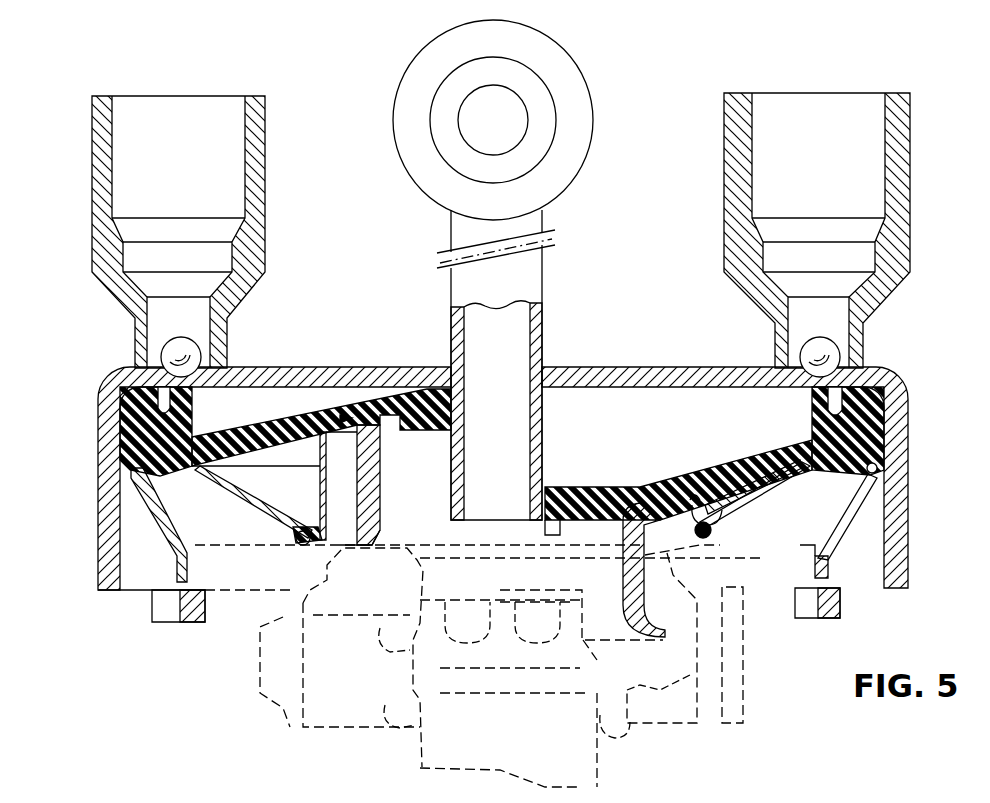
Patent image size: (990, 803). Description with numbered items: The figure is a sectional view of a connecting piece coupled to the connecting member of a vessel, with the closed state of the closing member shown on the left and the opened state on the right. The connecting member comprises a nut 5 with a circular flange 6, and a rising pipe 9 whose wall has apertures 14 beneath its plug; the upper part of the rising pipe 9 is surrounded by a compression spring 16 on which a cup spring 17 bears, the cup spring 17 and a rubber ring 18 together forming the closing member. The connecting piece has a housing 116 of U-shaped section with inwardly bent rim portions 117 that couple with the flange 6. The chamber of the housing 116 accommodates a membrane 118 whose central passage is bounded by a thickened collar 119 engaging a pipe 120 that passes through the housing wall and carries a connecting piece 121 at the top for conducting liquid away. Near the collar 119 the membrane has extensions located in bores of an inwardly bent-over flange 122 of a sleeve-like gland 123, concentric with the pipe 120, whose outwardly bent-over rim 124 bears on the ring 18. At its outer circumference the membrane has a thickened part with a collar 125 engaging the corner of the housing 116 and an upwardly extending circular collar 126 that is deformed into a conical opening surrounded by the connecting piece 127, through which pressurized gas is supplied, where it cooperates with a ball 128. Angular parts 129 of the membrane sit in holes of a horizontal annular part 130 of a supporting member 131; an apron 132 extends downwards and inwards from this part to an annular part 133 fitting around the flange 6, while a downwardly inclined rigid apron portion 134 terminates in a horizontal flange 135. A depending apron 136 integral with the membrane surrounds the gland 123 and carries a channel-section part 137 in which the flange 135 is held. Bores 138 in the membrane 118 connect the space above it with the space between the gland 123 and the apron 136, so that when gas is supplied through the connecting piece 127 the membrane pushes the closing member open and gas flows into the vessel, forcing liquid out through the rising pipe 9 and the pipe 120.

The nut 5 is at (722, 695).
The circular flange 6 is at (243, 582).
The rising pipe 9 is at (470, 755).
The apertures 14 is at (530, 637).
The compression spring 16 is at (390, 722).
The cup spring 17 is at (628, 690).
The ring 18 is at (665, 673).
The housing 116 is at (900, 534).
The inwardly bent rim portions 117 is at (835, 603).
The membrane 118 is at (297, 420).
The thickened collar 119 is at (566, 490).
The pipe 120 is at (545, 326).
The connecting piece 121 is at (573, 162).
The inwardly bent-over flange 122 is at (592, 492).
The sleeve-like gland 123 is at (368, 492).
The outwardly bent-over rim 124 is at (348, 543).
The collar 125 is at (125, 400).
The circular collar 126 is at (188, 400).
The connecting piece 127 is at (258, 172).
The ball 128 is at (190, 350).
The angular parts 129 is at (836, 475).
The annular part 130 is at (878, 470).
The supporting member 131 is at (150, 521).
The apron 132 is at (840, 518).
The annular part 133 is at (830, 566).
The rigid apron portion 134 is at (752, 482).
The horizontal flange 135 is at (712, 531).
The depending apron 136 is at (312, 500).
The channel-section part 137 is at (290, 537).
The bores 138 is at (344, 414).